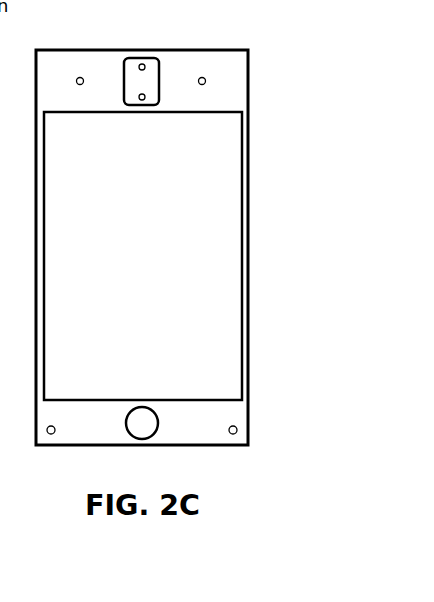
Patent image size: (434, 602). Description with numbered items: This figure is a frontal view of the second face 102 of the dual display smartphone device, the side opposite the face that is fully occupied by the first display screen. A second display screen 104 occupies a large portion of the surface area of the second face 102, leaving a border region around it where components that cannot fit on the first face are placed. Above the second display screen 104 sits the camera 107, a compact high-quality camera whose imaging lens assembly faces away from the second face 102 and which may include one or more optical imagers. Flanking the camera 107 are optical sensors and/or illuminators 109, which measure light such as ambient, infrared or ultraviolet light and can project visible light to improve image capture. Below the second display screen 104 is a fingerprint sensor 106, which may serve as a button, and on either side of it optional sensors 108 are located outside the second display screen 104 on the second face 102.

The second face 102 is at (145, 268).
The second display screen 104 is at (167, 280).
The fingerprint sensor 106 is at (143, 407).
The camera 107 is at (150, 58).
The sensors 108 is at (51, 426).
The optical sensors and/or illuminators 109 is at (80, 78).